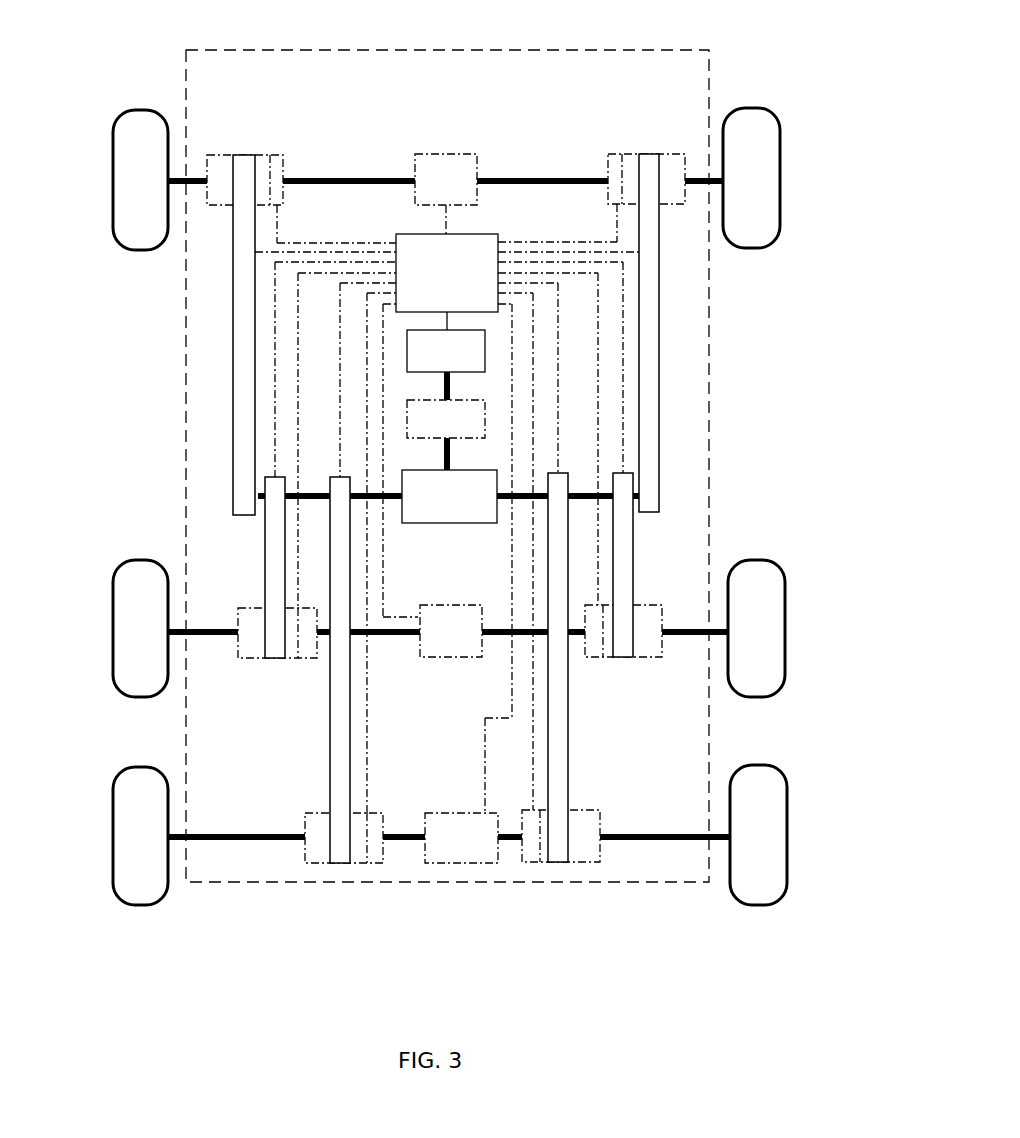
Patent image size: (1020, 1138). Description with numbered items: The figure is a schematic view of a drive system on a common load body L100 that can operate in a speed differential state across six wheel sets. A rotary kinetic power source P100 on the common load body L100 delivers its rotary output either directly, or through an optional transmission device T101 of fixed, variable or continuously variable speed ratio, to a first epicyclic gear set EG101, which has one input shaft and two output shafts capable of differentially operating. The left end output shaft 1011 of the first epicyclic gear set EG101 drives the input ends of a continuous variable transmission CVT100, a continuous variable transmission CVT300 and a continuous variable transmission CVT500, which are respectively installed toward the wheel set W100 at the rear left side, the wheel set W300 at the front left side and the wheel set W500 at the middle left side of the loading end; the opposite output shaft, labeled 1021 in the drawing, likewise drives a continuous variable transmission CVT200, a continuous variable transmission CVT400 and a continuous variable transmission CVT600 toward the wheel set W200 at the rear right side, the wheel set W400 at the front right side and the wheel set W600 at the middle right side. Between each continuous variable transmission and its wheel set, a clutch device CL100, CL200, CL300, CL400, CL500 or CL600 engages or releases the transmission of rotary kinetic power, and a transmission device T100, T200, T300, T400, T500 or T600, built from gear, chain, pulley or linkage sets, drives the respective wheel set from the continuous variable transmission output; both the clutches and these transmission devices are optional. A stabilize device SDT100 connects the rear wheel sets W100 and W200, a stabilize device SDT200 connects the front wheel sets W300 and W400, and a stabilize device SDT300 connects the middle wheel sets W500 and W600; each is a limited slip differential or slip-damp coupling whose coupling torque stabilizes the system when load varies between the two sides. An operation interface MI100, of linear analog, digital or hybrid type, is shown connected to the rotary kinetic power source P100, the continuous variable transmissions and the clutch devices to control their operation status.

The common load body L100 is at (380, 50).
The wheel set at the rear left side W100 is at (130, 852).
The wheel set at the rear right side W200 is at (767, 843).
The wheel set at the front left side W300 is at (128, 200).
The wheel set at the front right side W400 is at (767, 197).
The wheel set at the middle left side W500 is at (130, 650).
The wheel set at the middle right side W600 is at (767, 645).
The transmission device T100 is at (313, 852).
The transmission device T200 is at (592, 848).
The transmission device T300 is at (223, 167).
The transmission device T400 is at (670, 157).
The transmission device T500 is at (253, 642).
The transmission device T600 is at (647, 643).
The transmission device T101 is at (446, 435).
The clutch device CL100 is at (368, 850).
The clutch device CL200 is at (540, 850).
The clutch device CL300 is at (268, 170).
The clutch device CL400 is at (620, 165).
The clutch device CL500 is at (297, 645).
The clutch device CL600 is at (603, 647).
The continuous variable transmission CVT100 is at (338, 797).
The continuous variable transmission CVT200 is at (565, 793).
The continuous variable transmission CVT300 is at (247, 352).
The continuous variable transmission CVT400 is at (648, 330).
The continuous variable transmission CVT500 is at (280, 590).
The continuous variable transmission CVT600 is at (618, 590).
The stabilize device SDT100 is at (455, 840).
The stabilize device SDT200 is at (452, 183).
The stabilize device SDT300 is at (435, 632).
The operation interface MI100 is at (447, 282).
The rotary kinetic power source P100 is at (446, 365).
The first epicyclic gear set EG101 is at (449, 496).
The left end output shaft 1011 is at (395, 523).
The second output shaft of engine 1021 is at (505, 497).